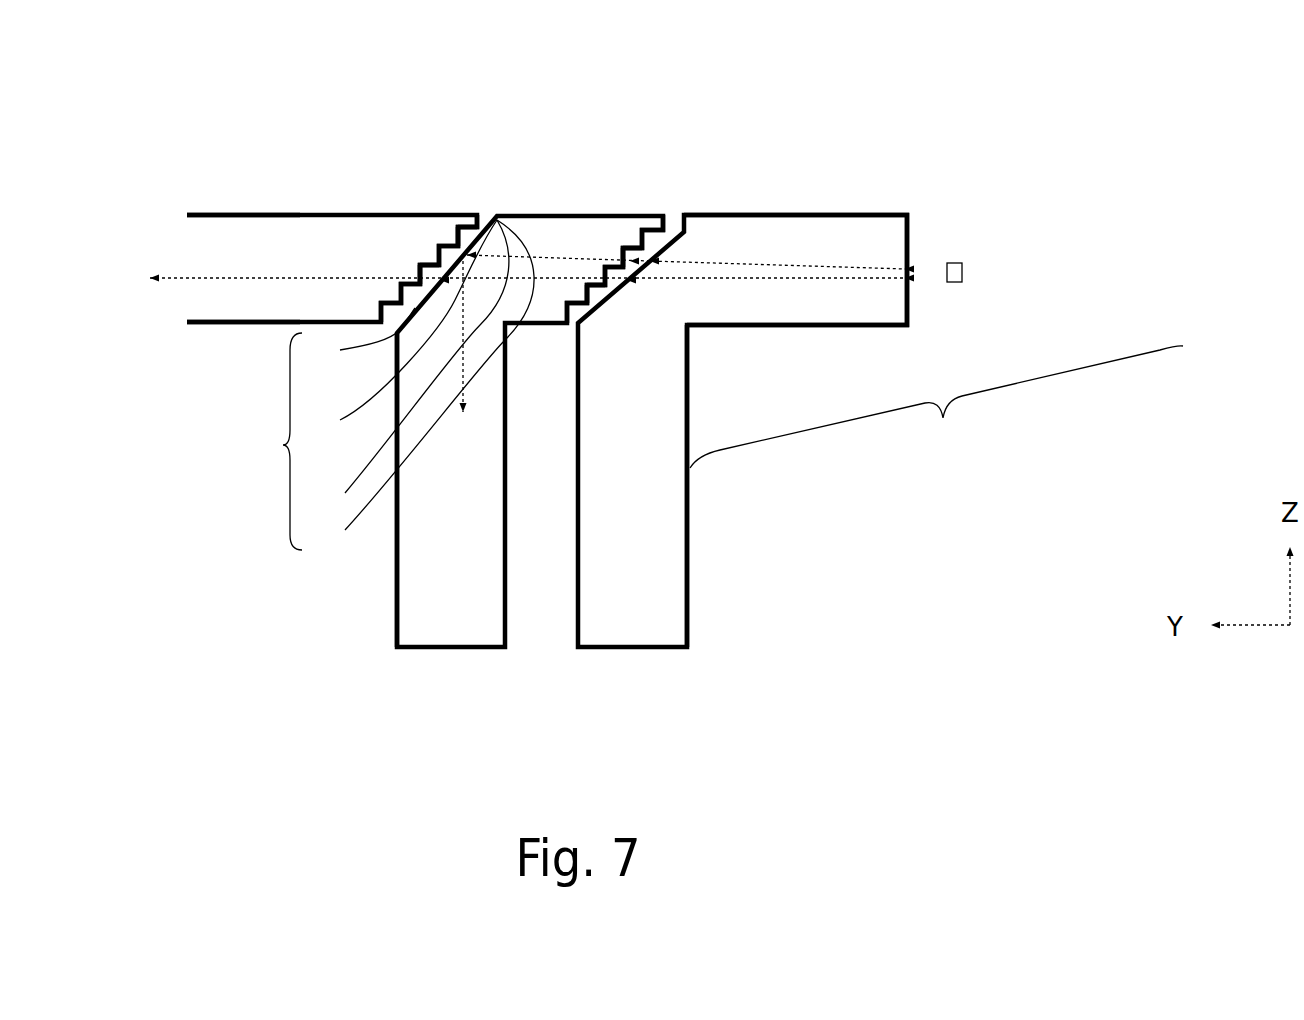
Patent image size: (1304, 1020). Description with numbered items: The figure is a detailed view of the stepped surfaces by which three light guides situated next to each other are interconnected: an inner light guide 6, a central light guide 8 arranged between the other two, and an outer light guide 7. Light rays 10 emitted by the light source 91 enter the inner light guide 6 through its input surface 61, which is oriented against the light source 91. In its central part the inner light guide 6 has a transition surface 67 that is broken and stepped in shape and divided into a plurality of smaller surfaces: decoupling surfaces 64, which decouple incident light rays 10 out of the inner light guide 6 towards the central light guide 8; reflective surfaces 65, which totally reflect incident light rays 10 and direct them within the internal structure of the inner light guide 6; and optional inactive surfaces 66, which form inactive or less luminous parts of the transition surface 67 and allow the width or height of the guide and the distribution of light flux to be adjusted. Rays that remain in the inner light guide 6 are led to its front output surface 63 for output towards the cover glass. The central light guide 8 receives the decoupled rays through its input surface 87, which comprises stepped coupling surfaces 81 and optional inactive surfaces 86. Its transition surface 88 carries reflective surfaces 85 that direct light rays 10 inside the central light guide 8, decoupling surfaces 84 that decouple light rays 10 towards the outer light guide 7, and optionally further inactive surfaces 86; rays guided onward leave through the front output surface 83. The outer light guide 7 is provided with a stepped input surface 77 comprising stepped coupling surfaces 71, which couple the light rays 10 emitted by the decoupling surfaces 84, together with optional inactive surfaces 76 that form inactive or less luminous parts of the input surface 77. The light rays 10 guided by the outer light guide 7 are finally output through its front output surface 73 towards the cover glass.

The inner light guide 6 is at (634, 662).
The outer light guide 7 is at (216, 333).
The central light guide 8 is at (446, 662).
The light rays 10 is at (170, 277).
The input surface 61 is at (910, 237).
The front output surface 63 is at (640, 497).
The decoupling surfaces 64 is at (600, 320).
The reflective surfaces 65 is at (605, 312).
The inactive surfaces 66 is at (582, 330).
The transition surface 67 is at (936, 407).
The coupling surfaces 71 is at (398, 296).
The front output surface 73 is at (292, 240).
The inactive surfaces 76 is at (415, 278).
The input surface 77 is at (338, 93).
The coupling surfaces 81 is at (590, 300).
The front output surface 83 is at (430, 623).
The decoupling surfaces 84 is at (407, 367).
The reflective surfaces 85 is at (419, 385).
The inactive surfaces 86 is at (605, 283).
The input surface 87 is at (528, 102).
The transition surface 88 is at (273, 441).
The light source 91 is at (965, 272).